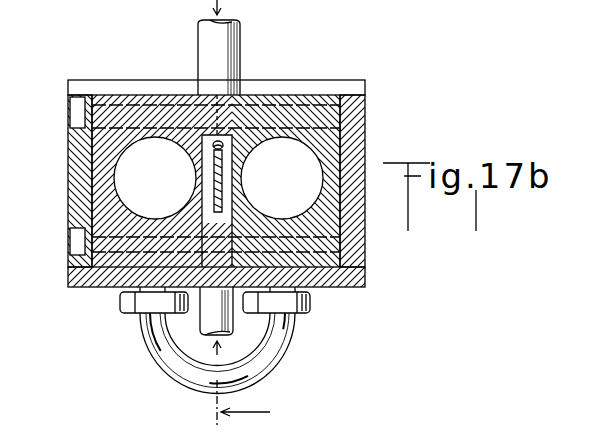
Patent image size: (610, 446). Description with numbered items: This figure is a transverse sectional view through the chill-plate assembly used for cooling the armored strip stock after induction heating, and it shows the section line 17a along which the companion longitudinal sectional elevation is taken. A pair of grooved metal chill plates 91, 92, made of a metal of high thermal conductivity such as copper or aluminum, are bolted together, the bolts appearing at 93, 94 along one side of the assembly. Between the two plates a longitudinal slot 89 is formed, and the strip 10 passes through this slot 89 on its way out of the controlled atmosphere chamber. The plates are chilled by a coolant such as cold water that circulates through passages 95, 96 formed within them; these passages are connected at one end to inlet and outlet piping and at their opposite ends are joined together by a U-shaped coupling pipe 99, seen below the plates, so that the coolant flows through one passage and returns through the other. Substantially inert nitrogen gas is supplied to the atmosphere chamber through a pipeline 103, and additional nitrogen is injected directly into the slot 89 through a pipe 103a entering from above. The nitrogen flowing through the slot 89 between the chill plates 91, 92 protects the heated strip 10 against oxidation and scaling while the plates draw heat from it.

The strip 10 is at (195, 150).
The chill plate 91 is at (92, 189).
The chill plate 92 is at (352, 138).
The bolt 93 is at (70, 114).
The bolt 94 is at (70, 244).
The coolant passage 95 is at (115, 163).
The coolant passage 96 is at (313, 162).
The longitudinal slot 89 is at (226, 146).
The pipe 103a is at (212, 41).
The pipeline 103 is at (214, 311).
The U-shaped coupling pipe 99 is at (280, 345).
The section line 17a is at (260, 403).